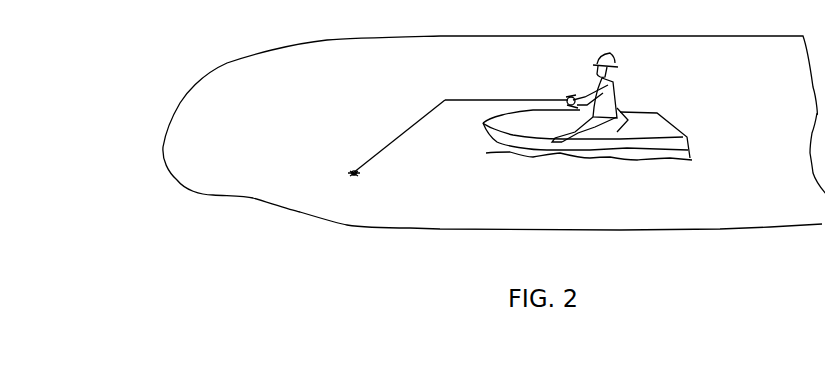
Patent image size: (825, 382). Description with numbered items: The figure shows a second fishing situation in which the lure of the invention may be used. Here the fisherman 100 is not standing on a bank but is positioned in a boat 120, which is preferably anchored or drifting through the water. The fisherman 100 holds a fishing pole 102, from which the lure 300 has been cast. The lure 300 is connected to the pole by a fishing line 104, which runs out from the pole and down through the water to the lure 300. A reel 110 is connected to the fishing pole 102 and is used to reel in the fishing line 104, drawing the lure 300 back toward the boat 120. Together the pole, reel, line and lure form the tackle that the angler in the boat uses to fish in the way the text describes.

The fisherman 100 is at (614, 102).
The fishing pole 102 is at (495, 100).
The fishing line 104 is at (413, 125).
The reel 110 is at (567, 97).
The boat 120 is at (692, 148).
The lure 300 is at (356, 170).